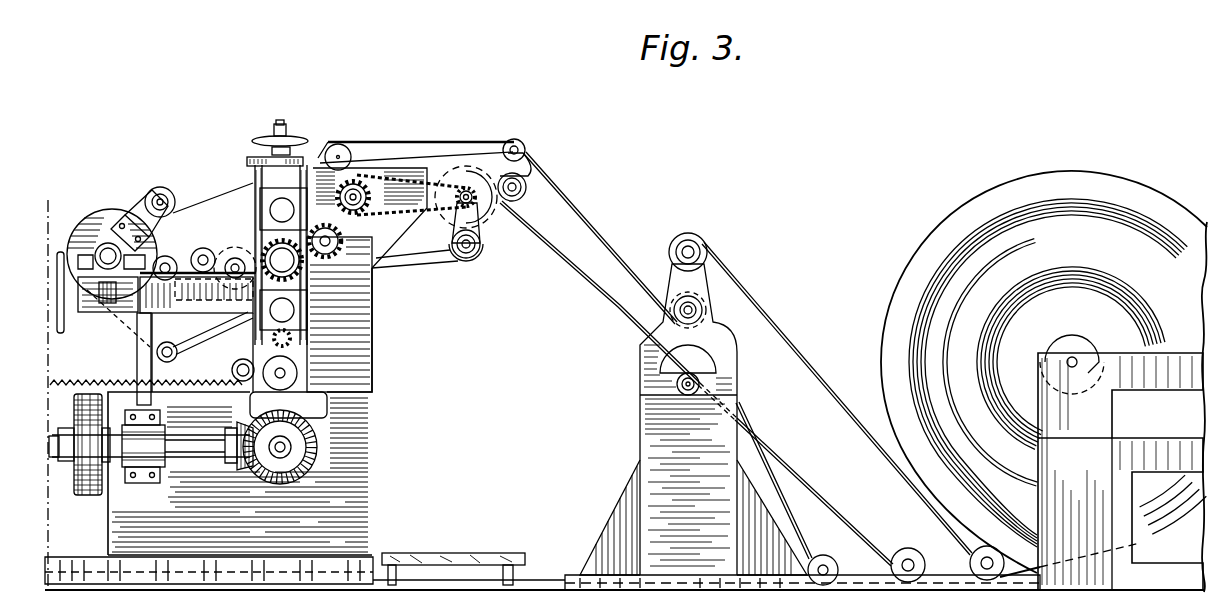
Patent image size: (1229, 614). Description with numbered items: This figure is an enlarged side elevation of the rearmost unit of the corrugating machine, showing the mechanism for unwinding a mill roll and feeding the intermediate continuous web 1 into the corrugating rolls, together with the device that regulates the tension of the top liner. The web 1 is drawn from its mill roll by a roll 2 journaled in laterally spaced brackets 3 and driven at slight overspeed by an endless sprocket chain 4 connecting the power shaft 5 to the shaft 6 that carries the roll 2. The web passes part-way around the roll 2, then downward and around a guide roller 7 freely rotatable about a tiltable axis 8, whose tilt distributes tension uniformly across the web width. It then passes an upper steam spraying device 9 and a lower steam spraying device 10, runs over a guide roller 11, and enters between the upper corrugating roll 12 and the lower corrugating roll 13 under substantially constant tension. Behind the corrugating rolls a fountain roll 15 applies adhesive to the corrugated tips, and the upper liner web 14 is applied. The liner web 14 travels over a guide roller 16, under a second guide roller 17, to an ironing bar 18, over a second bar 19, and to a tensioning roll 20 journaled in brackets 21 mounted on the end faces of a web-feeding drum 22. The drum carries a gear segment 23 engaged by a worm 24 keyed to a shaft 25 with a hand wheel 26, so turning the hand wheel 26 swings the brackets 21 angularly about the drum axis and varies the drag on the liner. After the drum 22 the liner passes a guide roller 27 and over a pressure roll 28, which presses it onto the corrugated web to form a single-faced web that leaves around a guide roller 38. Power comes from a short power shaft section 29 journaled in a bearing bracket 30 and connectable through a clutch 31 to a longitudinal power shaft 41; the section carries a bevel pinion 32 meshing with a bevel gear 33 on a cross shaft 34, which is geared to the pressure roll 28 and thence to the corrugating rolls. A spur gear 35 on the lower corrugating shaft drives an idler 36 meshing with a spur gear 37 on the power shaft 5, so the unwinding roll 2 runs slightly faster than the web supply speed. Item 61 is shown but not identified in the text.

The intermediate continuous web 1 is at (600, 290).
The roll 2 is at (500, 218).
The brackets 3 is at (535, 167).
The endless sprocket chain 4 is at (400, 170).
The power shaft 5 is at (358, 190).
The shaft 6 is at (468, 188).
The guide roller 7 is at (465, 262).
The tiltable axis 8 is at (480, 252).
The upper steam spraying device 9 is at (412, 250).
The lower steam spraying device 10 is at (340, 268).
The guide roller 11 is at (320, 258).
The upper corrugating roll 12 is at (252, 192).
The lower corrugating roll 13 is at (262, 262).
The upper liner web 14 is at (810, 368).
The fountain roll 15 is at (232, 250).
The guide roller 16 is at (709, 253).
The second guide roller 17 is at (680, 296).
The ironing bar 18 is at (520, 142).
The second bar 19 is at (342, 148).
The tensioning roll 20 is at (163, 188).
The brackets 21 is at (140, 212).
The web-feeding drum 22 is at (88, 230).
The gear segment 23 is at (172, 258).
The worm 24 is at (103, 307).
The shaft 25 is at (98, 305).
The hand wheel 26 is at (60, 250).
The guide roller 27 is at (176, 345).
The pressure roll 28 is at (230, 322).
The short power shaft section 29 is at (188, 458).
The bearing bracket 30 is at (145, 483).
The clutch 31 is at (88, 496).
The bevel pinion 32 is at (242, 468).
The bevel gear 33 is at (312, 472).
The cross shaft 34 is at (287, 446).
The spur gear 35 is at (305, 312).
The idler 36 is at (325, 262).
The spur gear 37 is at (322, 173).
The guide roller 38 is at (238, 366).
The longitudinal power shaft 41 is at (55, 458).
The platform 61 is at (532, 580).